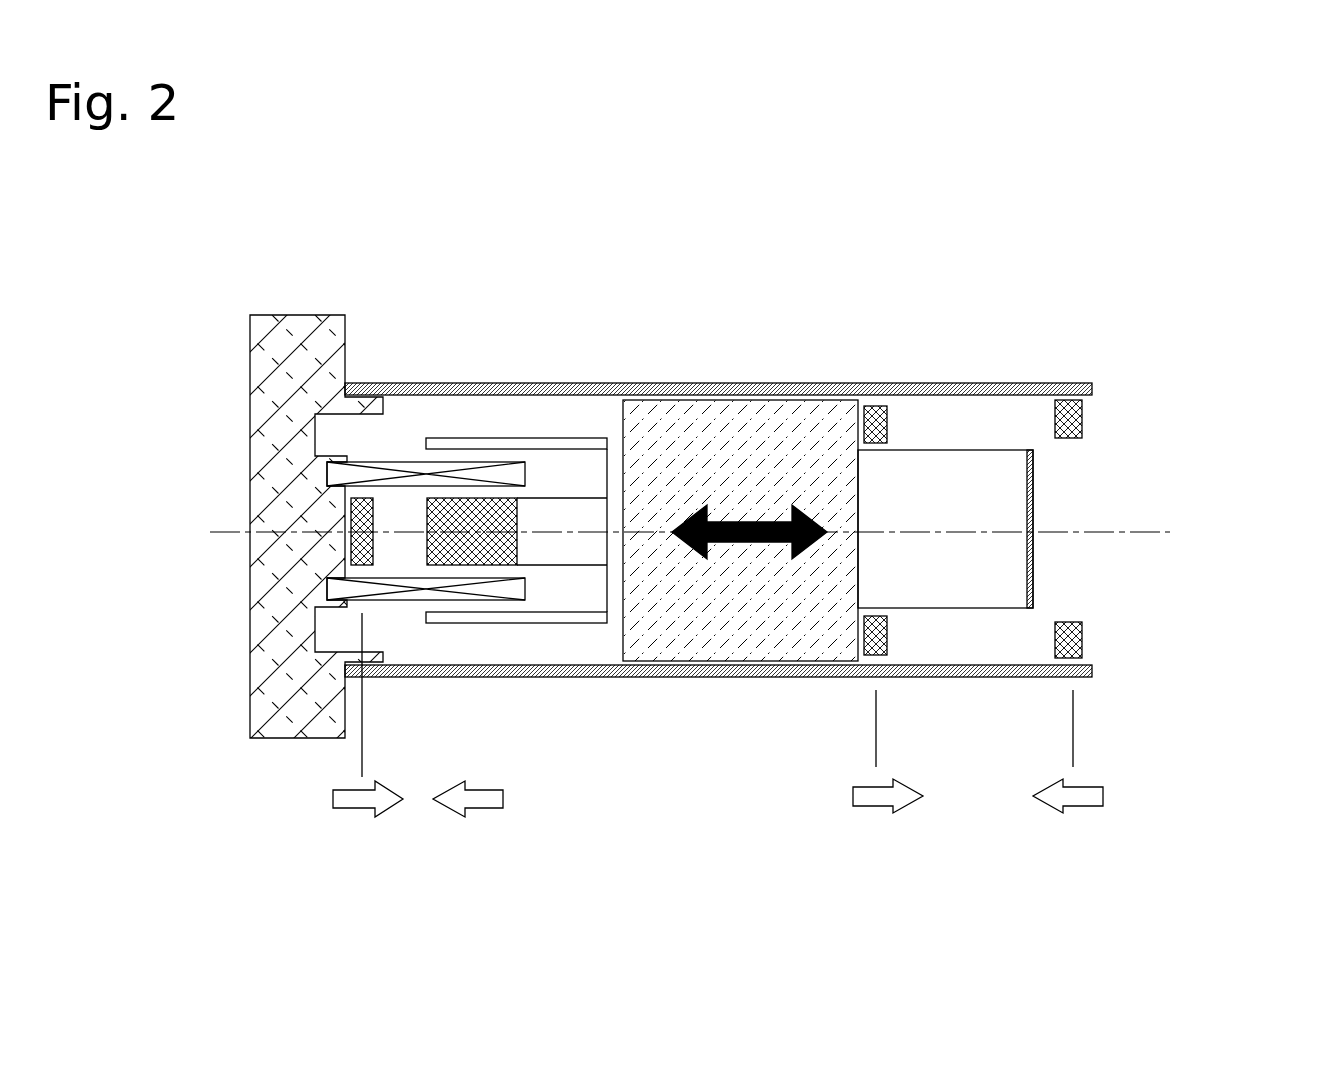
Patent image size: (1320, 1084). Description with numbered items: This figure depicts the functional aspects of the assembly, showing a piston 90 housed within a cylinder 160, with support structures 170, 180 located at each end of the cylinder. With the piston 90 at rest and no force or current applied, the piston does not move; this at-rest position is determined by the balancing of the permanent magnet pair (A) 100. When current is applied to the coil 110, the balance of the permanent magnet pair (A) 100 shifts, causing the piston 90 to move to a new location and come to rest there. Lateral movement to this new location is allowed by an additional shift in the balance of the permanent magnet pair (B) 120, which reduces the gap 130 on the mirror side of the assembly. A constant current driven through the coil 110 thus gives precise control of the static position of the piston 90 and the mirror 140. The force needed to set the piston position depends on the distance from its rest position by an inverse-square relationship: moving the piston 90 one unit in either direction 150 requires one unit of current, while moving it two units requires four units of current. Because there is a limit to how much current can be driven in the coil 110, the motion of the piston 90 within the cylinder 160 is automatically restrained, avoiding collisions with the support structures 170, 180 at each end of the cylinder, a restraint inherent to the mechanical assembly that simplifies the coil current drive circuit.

The piston 90 is at (777, 622).
The permanent magnet pair (A) 100 is at (473, 777).
The coil 110 is at (525, 478).
The permanent magnet pair (B) 120 is at (1192, 328).
The gap 130 is at (968, 805).
The mirror 140 is at (990, 481).
The direction 150 is at (791, 500).
The cylinder 160 is at (580, 683).
The support structure 170 is at (245, 730).
The support structure 180 is at (1288, 632).